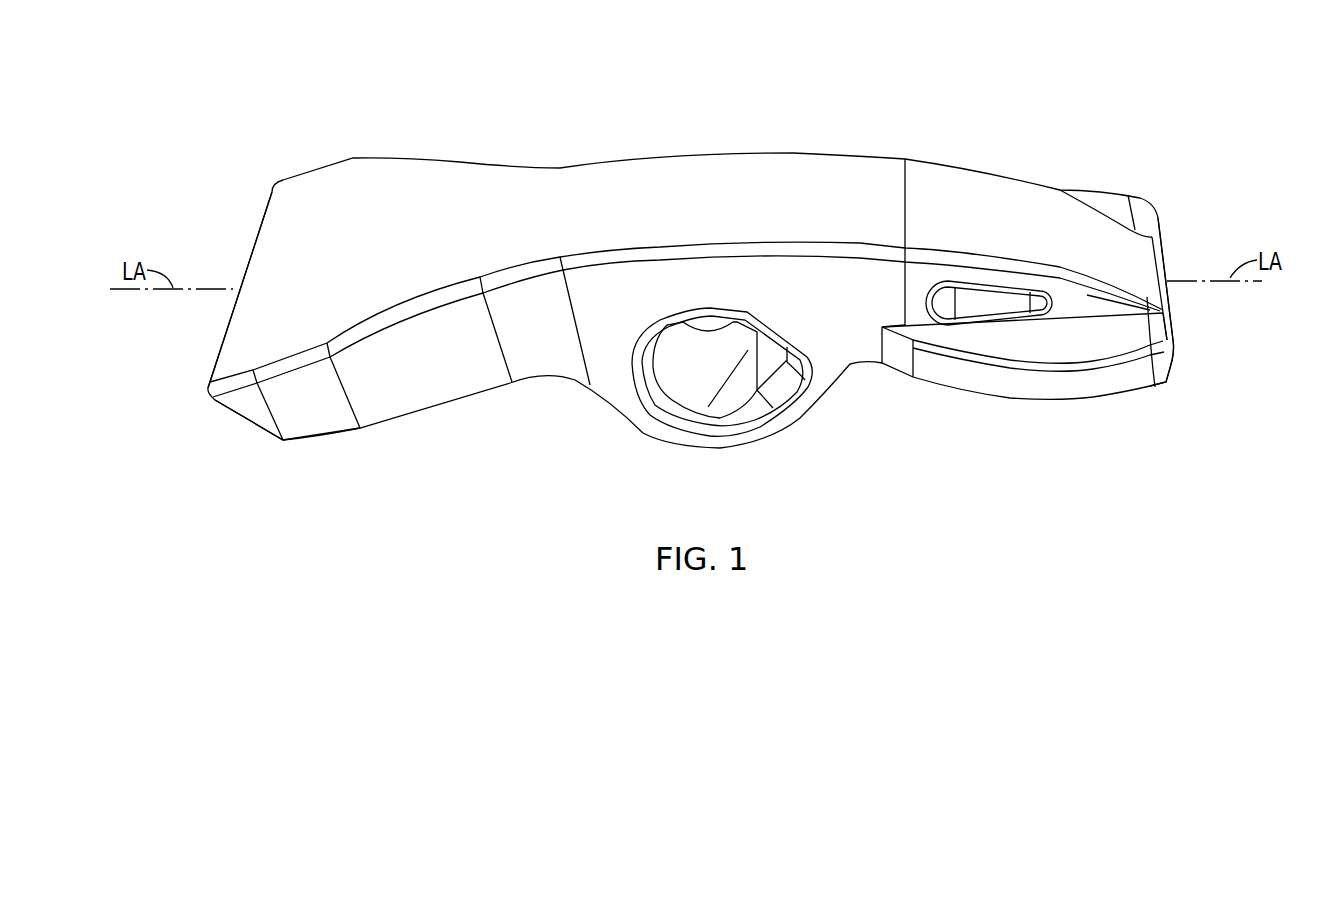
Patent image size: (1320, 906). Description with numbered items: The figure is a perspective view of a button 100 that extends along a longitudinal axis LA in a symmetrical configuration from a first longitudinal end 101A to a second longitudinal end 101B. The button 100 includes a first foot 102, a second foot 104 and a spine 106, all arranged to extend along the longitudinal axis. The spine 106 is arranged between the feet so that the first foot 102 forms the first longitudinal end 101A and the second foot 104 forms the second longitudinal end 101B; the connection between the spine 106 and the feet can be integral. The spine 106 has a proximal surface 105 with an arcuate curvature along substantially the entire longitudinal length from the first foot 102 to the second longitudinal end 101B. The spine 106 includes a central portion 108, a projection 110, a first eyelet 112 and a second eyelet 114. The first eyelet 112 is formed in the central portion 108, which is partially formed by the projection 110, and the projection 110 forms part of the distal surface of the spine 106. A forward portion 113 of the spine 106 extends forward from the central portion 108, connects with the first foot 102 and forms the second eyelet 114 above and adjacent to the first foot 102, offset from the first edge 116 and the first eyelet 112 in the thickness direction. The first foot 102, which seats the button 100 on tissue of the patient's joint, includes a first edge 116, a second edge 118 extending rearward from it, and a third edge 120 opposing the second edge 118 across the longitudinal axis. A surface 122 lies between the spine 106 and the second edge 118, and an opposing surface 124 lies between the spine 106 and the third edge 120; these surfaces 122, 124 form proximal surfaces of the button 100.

The button 100 is at (354, 71).
The first longitudinal end 101A is at (1207, 235).
The second longitudinal end 101B is at (245, 257).
The first foot 102 is at (1179, 394).
The second foot 104 is at (235, 441).
The proximal surface 105 is at (718, 178).
The spine 106 is at (866, 382).
The central portion 108 is at (800, 295).
The projection 110 is at (635, 410).
The first eyelet 112 is at (693, 391).
The forward portion 113 is at (1170, 322).
The second eyelet 114 is at (988, 309).
The first edge 116 is at (1201, 272).
The second edge 118 is at (1063, 385).
The third edge 120 is at (1092, 187).
The surface 122 is at (1100, 347).
The surface 124 is at (1120, 207).